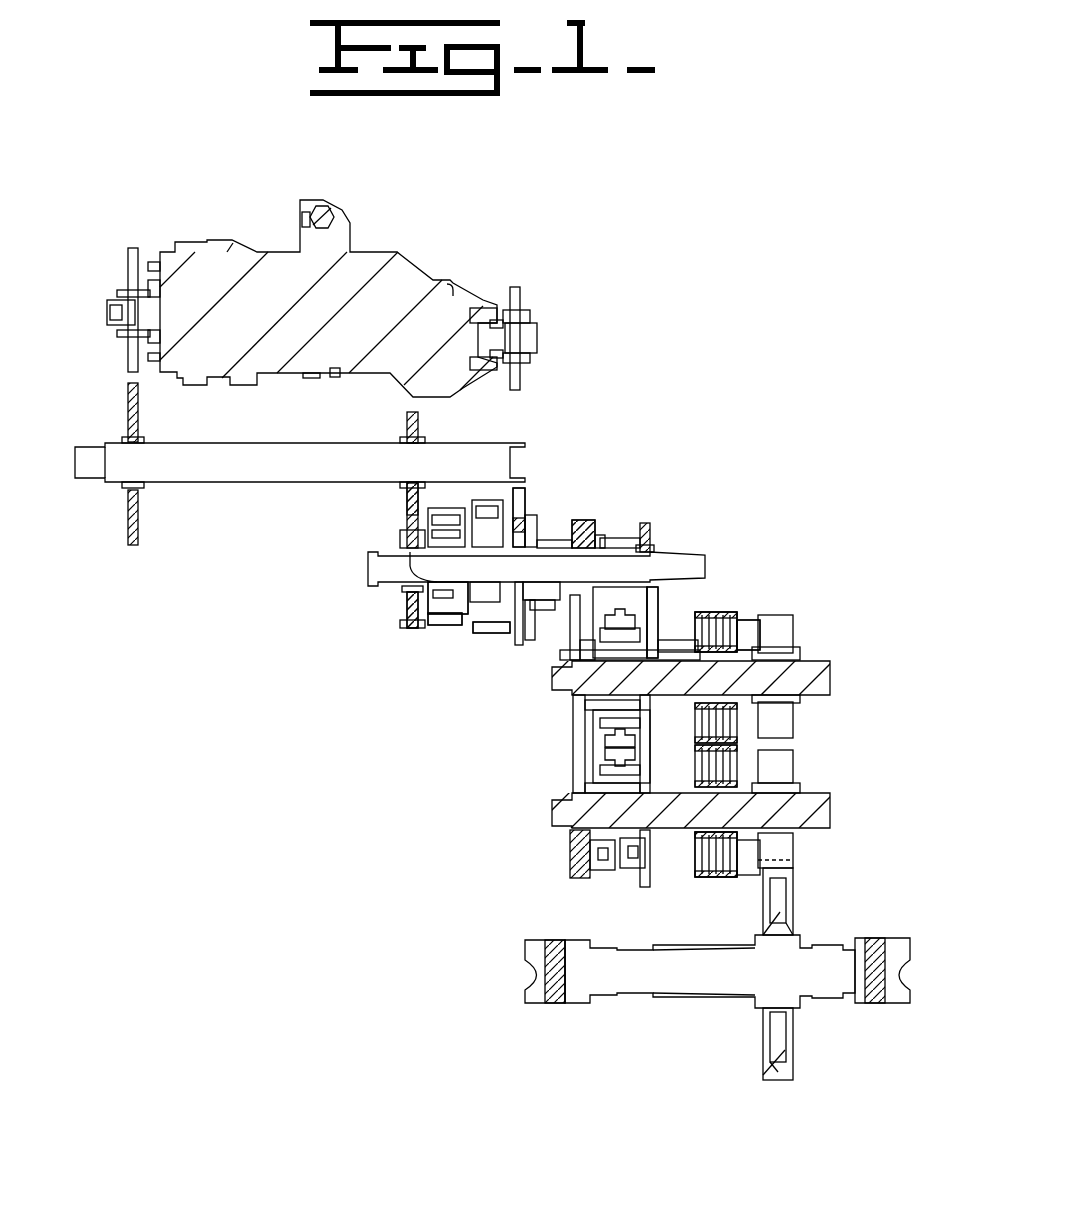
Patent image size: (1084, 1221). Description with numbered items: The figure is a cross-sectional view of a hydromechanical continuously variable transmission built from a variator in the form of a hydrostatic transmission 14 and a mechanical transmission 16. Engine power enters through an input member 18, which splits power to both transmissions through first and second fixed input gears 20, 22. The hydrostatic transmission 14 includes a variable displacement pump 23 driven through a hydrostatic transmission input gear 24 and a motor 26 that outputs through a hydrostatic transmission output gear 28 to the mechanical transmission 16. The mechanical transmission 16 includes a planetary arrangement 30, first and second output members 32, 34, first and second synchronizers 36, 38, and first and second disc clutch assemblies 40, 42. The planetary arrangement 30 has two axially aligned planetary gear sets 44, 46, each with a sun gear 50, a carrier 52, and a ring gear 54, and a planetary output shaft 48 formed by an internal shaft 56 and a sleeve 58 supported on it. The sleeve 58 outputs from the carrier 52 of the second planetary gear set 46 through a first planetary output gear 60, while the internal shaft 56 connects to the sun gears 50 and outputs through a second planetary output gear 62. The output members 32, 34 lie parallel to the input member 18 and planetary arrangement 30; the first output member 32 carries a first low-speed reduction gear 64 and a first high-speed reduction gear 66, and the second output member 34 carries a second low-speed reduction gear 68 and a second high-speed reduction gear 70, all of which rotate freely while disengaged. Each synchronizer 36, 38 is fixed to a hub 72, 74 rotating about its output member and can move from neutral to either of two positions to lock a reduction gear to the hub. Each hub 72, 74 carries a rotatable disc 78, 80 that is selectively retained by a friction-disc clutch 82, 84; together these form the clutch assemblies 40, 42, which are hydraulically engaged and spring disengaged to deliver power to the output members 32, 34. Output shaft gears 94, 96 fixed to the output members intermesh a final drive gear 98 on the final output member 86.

The hydrostatic transmission 14 is at (398, 213).
The variable displacement pump 23 is at (226, 252).
The hydrostatic transmission input gear 24 is at (128, 258).
The motor 26 is at (447, 288).
The hydrostatic transmission output gear 28 is at (525, 305).
The second fixed input gear 22 is at (420, 432).
The input member 18 is at (240, 484).
The first fixed input gear 20 is at (128, 530).
The planetary output shaft 48 is at (636, 499).
The sleeve 58 is at (540, 525).
The first planetary output gear 60 is at (588, 520).
The second planetary output gear 62 is at (650, 527).
The internal shaft 56 is at (710, 560).
The sun gear 50 is at (368, 571).
The carrier 52 is at (405, 600).
The first planetary gear set 44 is at (430, 620).
The second planetary gear set 46 is at (470, 614).
The ring gear 54 is at (490, 636).
The planetary arrangement 30 is at (428, 702).
The first output member 32 is at (552, 675).
The second output member 34 is at (553, 813).
The first synchronizer 36 is at (613, 632).
The first high-speed reduction gear 66 is at (655, 622).
The first low-speed reduction gear 64 is at (575, 716).
The first hub 72 is at (700, 705).
The first disc clutch assembly 40 is at (766, 586).
The rotatable disc 78 is at (715, 612).
The friction-disc clutch 82 is at (740, 605).
The rotatable disc 80 is at (718, 880).
The friction-disc clutch 84 is at (735, 880).
The second disc clutch assembly 42 is at (681, 892).
The first output shaft gear 94 is at (795, 632).
The second output shaft gear 96 is at (795, 757).
The final drive gear 98 is at (795, 902).
The second low-speed reduction gear 68 is at (572, 850).
The second synchronizer 38 is at (605, 870).
The second high-speed reduction gear 70 is at (642, 878).
The second hub 74 is at (665, 838).
The final output member 86 is at (905, 1003).
The mechanical transmission 16 is at (866, 815).